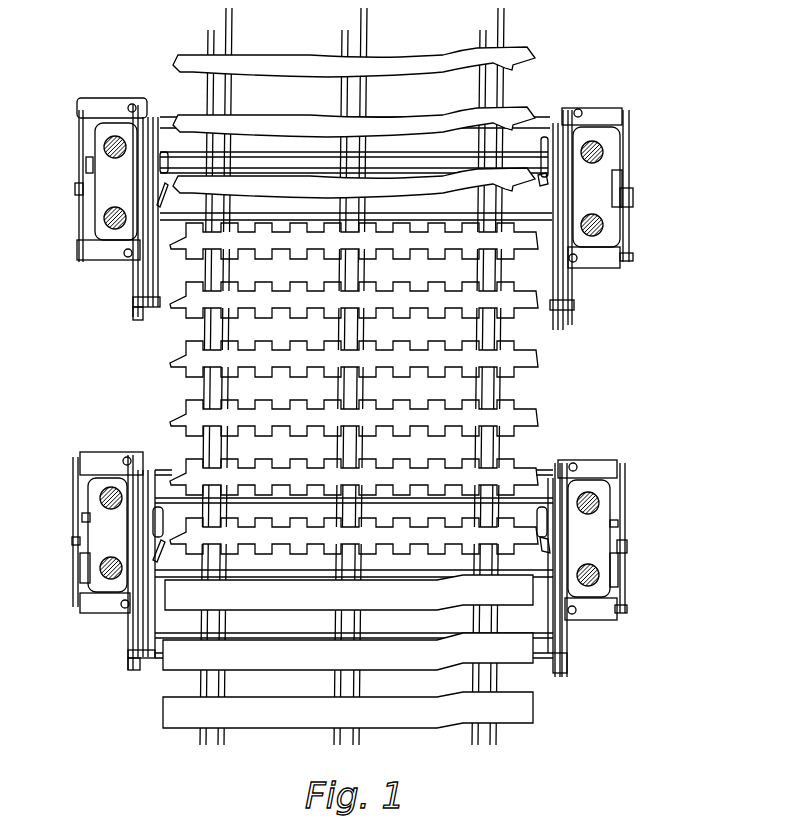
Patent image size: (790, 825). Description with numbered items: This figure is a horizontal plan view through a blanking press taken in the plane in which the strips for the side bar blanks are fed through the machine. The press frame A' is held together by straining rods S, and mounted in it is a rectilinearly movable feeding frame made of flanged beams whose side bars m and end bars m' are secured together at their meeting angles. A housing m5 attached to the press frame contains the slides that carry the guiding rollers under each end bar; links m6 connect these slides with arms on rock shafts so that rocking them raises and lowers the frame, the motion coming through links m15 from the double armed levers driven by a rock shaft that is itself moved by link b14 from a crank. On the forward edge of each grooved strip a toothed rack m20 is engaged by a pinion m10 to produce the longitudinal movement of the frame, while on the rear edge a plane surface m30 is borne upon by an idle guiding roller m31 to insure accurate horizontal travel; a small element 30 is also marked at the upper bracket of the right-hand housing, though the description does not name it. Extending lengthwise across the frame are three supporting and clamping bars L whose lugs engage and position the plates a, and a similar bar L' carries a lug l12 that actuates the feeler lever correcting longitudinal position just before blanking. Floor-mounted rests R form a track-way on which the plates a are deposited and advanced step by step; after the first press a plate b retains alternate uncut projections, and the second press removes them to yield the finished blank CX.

The rests or supports R is at (233, 43).
The supporting and clamping bars L is at (335, 395).
The finished blank CX is at (354, 122).
The plate a is at (348, 651).
The plate after first blanking b is at (354, 388).
The straining rods S is at (352, 360).
The frame of the blanking press A' is at (354, 359).
The side bars m is at (343, 403).
The end bars m' is at (359, 497).
The housing m5 is at (113, 103).
The links m6 is at (82, 585).
The pinion m10 is at (117, 606).
The links m15 is at (80, 142).
The toothed rack m20 is at (574, 298).
The plane surface m30 is at (135, 455).
The idle guiding roller m31 is at (583, 110).
The pin 30 is at (612, 118).
The lug l12 is at (351, 382).
The bar L' is at (351, 445).
The link b14 is at (85, 557).